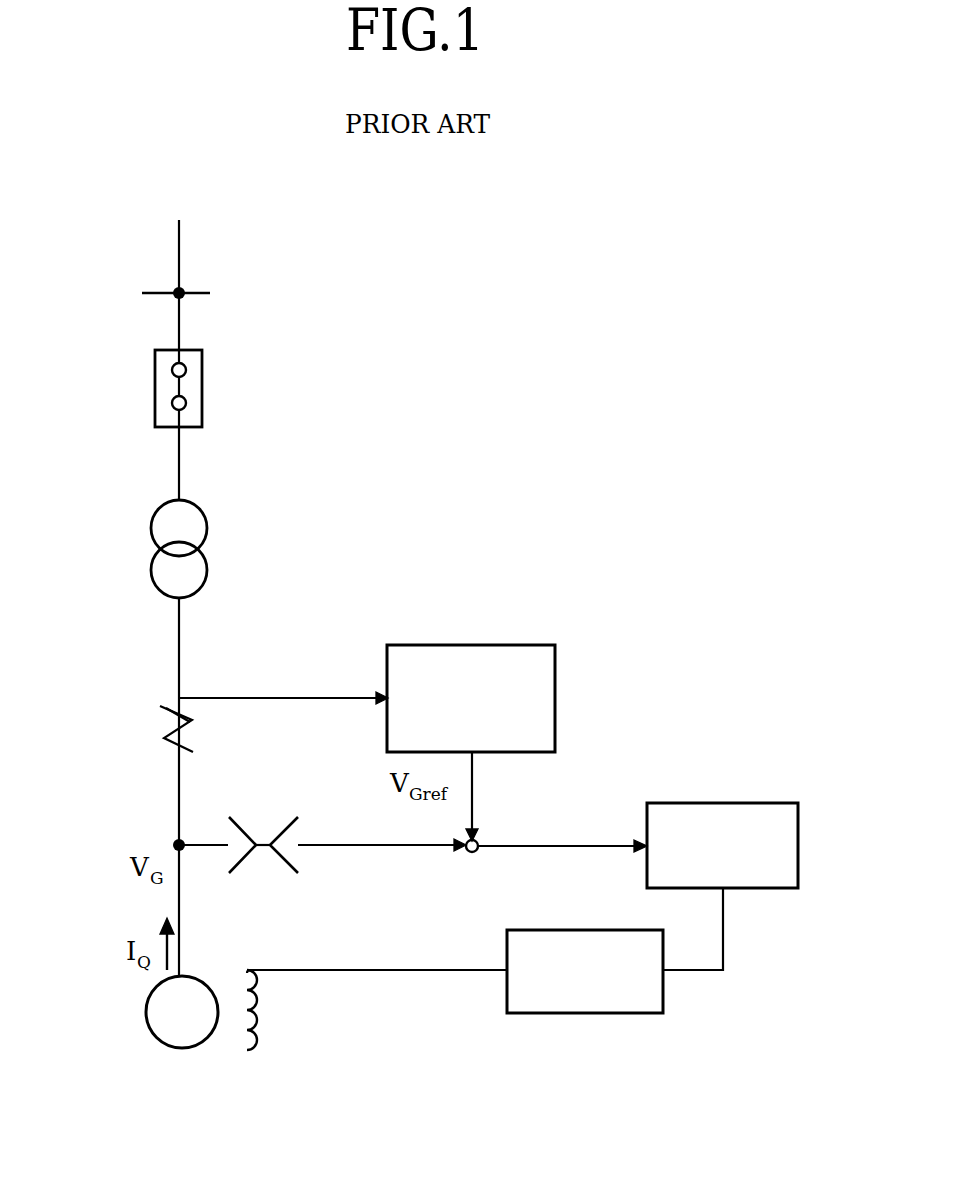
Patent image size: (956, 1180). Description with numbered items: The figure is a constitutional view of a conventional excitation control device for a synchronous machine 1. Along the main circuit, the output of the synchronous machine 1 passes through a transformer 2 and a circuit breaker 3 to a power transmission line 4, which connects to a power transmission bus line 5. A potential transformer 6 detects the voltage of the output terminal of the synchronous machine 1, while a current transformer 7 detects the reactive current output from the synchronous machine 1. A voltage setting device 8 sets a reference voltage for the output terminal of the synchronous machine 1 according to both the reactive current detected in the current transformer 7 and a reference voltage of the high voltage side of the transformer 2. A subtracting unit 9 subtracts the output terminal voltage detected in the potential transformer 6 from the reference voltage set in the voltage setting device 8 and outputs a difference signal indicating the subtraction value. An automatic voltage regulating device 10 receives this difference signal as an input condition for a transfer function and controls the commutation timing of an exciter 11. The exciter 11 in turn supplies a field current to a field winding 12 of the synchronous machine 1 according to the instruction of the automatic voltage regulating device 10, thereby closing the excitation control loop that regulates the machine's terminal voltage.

The synchronous machine 1 is at (158, 1036).
The transformer 2 is at (207, 523).
The circuit breaker 3 is at (203, 378).
The power transmission line 4 is at (180, 262).
The power transmission bus line 5 is at (146, 295).
The potential transformer 6 is at (292, 874).
The current transformer 7 is at (168, 742).
The voltage setting device 8 is at (513, 645).
The subtracting unit 9 is at (472, 853).
The automatic voltage regulating device 10 is at (748, 803).
The exciter 11 is at (580, 930).
The field winding 12 is at (258, 1035).